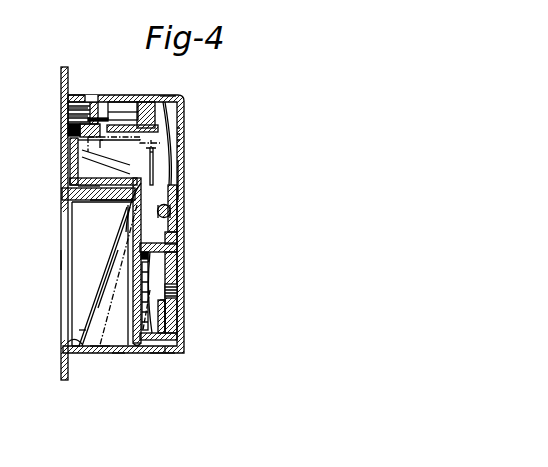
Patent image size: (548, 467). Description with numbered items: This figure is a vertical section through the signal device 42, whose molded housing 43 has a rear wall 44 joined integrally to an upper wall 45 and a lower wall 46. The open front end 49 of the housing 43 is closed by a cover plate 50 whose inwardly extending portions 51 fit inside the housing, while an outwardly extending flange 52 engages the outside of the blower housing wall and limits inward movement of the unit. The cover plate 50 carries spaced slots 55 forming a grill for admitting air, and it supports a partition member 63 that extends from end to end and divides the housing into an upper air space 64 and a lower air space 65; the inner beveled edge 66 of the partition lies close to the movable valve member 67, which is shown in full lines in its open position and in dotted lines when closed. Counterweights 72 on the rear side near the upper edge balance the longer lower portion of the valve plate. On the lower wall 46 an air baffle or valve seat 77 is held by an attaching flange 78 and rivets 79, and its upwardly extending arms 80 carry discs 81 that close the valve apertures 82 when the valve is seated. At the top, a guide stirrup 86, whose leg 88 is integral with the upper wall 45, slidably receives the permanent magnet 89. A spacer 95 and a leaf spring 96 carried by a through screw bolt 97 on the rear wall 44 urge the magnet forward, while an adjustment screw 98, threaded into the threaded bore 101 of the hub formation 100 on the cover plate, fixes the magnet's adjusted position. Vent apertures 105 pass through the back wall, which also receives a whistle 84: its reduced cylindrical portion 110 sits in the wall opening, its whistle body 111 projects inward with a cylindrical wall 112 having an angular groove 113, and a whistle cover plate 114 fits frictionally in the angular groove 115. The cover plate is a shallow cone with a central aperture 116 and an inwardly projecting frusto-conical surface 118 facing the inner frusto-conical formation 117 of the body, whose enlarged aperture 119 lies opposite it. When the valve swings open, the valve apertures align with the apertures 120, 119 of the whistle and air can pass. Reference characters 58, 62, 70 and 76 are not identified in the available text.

The signal device 42 is at (186, 106).
The housing 43 is at (146, 97).
The rear wall 44 is at (184, 178).
The upper wall 45 is at (166, 96).
The lower wall 46 is at (98, 354).
The open front end 49 is at (68, 104).
The cover plate 50 is at (60, 198).
The inwardly extending portions 51 is at (75, 95).
The flange 52 is at (61, 78).
The slots 55 is at (65, 258).
The frame 58 is at (75, 149).
The cable 62 is at (103, 163).
The partition member 63 is at (103, 200).
The upper air space 64 is at (117, 152).
The lower air space 65 is at (73, 268).
The inner beveled edge 66 is at (130, 208).
The movable valve member 67 is at (130, 247).
The plunger 70 is at (140, 208).
The counterweights 72 is at (152, 170).
The support 76 is at (78, 187).
The air baffle or valve seat 77 is at (100, 293).
The attaching flange 78 is at (75, 353).
The rivets 79 is at (67, 344).
The upwardly extending arms 80 is at (82, 328).
The disc 81 is at (110, 270).
The valve apertures 82 is at (133, 283).
The whistle 84 is at (171, 237).
The guide stirrup 86 is at (166, 123).
The leg 88 is at (130, 110).
The permanent magnet 89 is at (141, 100).
The spacer 95 is at (178, 196).
The leaf spring 96 is at (153, 150).
The through screw bolt 97 is at (171, 212).
The adjustment screw 98 is at (77, 123).
The hub formation 100 is at (77, 115).
The threaded bore 101 is at (74, 133).
The vent apertures 105 is at (182, 139).
The reduced cylindrical portion 110 is at (173, 248).
The whistle body 111 is at (170, 353).
The cylindrical wall 112 is at (163, 353).
The angular groove 113 is at (161, 292).
The whistle cover plate 114 is at (173, 303).
The angular groove 115 is at (118, 360).
The central aperture 116 is at (173, 272).
The inner frusto-conical formation 117 is at (170, 315).
The frusto-conical surface 118 is at (165, 337).
The enlarged aperture 119 is at (176, 292).
The apertures 120 is at (140, 293).